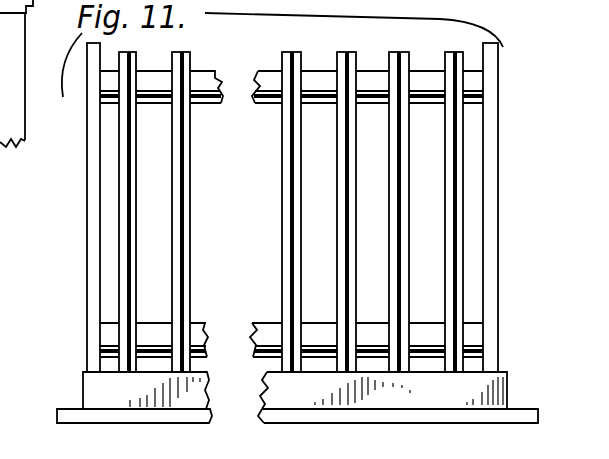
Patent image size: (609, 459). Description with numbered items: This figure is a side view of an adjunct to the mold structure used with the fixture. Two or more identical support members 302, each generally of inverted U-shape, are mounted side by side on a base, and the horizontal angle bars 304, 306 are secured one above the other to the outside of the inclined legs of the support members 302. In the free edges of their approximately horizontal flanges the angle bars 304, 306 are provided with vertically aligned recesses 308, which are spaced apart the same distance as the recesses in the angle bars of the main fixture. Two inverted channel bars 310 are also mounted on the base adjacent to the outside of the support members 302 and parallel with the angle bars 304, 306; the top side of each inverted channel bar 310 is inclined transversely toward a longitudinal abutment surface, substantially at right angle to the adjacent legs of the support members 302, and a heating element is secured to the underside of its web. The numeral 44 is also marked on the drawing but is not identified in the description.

The vertical bars 44 is at (288, 193).
The support member 302 is at (97, 172).
The horizontal angle bar 304 is at (214, 104).
The horizontal angle bar 306 is at (201, 325).
The recess 308 is at (270, 80).
The inverted channel bar 310 is at (100, 384).